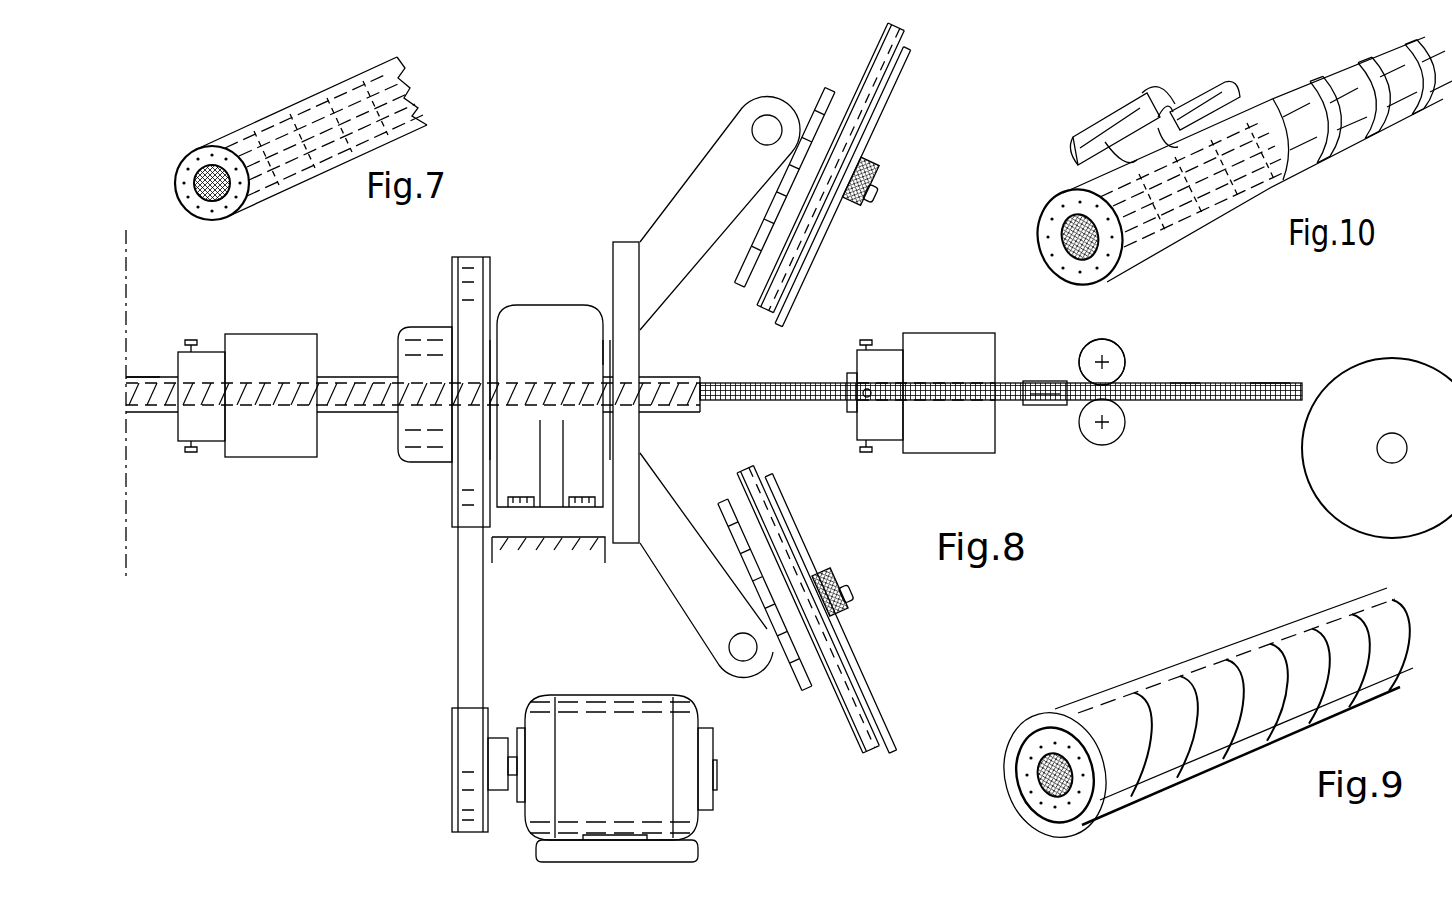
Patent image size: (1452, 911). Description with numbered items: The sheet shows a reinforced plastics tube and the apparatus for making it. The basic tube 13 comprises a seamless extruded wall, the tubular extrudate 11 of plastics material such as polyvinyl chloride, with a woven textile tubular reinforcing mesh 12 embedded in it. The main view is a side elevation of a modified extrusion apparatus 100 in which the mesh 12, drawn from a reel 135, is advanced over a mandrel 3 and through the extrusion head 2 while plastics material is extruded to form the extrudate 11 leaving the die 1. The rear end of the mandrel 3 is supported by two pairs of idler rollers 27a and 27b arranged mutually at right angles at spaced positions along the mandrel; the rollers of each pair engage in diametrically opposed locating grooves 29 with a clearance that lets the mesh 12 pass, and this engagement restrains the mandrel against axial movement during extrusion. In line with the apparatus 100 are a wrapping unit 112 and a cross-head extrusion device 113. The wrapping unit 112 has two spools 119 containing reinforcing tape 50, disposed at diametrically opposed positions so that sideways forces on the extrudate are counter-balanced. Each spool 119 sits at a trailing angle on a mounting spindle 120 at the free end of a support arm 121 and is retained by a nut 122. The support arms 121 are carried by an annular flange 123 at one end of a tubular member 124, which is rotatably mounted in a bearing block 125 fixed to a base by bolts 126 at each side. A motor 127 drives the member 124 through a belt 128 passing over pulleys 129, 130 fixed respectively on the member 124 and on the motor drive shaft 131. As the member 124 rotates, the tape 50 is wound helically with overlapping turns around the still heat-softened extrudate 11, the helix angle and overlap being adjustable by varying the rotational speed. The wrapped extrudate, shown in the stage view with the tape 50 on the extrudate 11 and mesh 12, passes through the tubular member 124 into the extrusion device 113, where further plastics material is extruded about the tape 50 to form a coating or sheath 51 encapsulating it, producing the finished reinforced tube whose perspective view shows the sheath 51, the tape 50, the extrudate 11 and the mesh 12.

In FIG. 8, the die 1 is at (848, 372).
In FIG. 8, the extrusion head 2 is at (947, 333).
In FIG. 8, the mandrel 3 is at (1185, 391).
In FIG. 7, the tubular extrudate 11 is at (193, 158).
In FIG. 8, the tubular extrudate 11 is at (810, 405).
In FIG. 10, the tubular extrudate 11 is at (1052, 201).
In FIG. 9, the tubular extrudate 11 is at (1022, 787).
In FIG. 7, the tubular reinforcing mesh 12 is at (196, 203).
In FIG. 8, the tubular reinforcing mesh 12 is at (1270, 383).
In FIG. 10, the tubular reinforcing mesh 12 is at (1047, 238).
In FIG. 9, the tubular reinforcing mesh 12 is at (1075, 810).
In FIG. 7, the reinforced plastics tube 13 is at (288, 206).
In FIG. 8, the idler rollers 27a is at (1117, 413).
In FIG. 8, the idler rollers 27b is at (1046, 404).
In FIG. 8, the locating grooves 29 is at (1086, 378).
In FIG. 8, the reinforcing tape 50 is at (350, 380).
In FIG. 10, the reinforcing tape 50 is at (1132, 105).
In FIG. 9, the reinforcing tape 50 is at (1019, 758).
In FIG. 8, the coating or sheath 51 is at (150, 377).
In FIG. 9, the coating or sheath 51 is at (1046, 718).
In FIG. 8, the extrusion apparatus 100 is at (1018, 343).
In FIG. 8, the wrapping unit 112 is at (577, 218).
In FIG. 8, the cross-head extrusion device 113 is at (276, 320).
In FIG. 8, the spools 119 is at (912, 62).
In FIG. 8, the mounting spindle 120 is at (880, 191).
In FIG. 8, the support arm 121 is at (700, 188).
In FIG. 8, the nuts 122 is at (876, 162).
In FIG. 8, the annular flange 123 is at (614, 266).
In FIG. 8, the tubular member 124 is at (607, 353).
In FIG. 8, the bearing block 125 is at (515, 313).
In FIG. 8, the bolts 126 is at (582, 508).
In FIG. 8, the motor 127 is at (598, 695).
In FIG. 8, the belt 128 is at (478, 646).
In FIG. 8, the pulley 129 is at (455, 275).
In FIG. 8, the pulley 130 is at (452, 744).
In FIG. 8, the motor drive shaft 131 is at (507, 792).
In FIG. 8, the reel 135 is at (1405, 369).